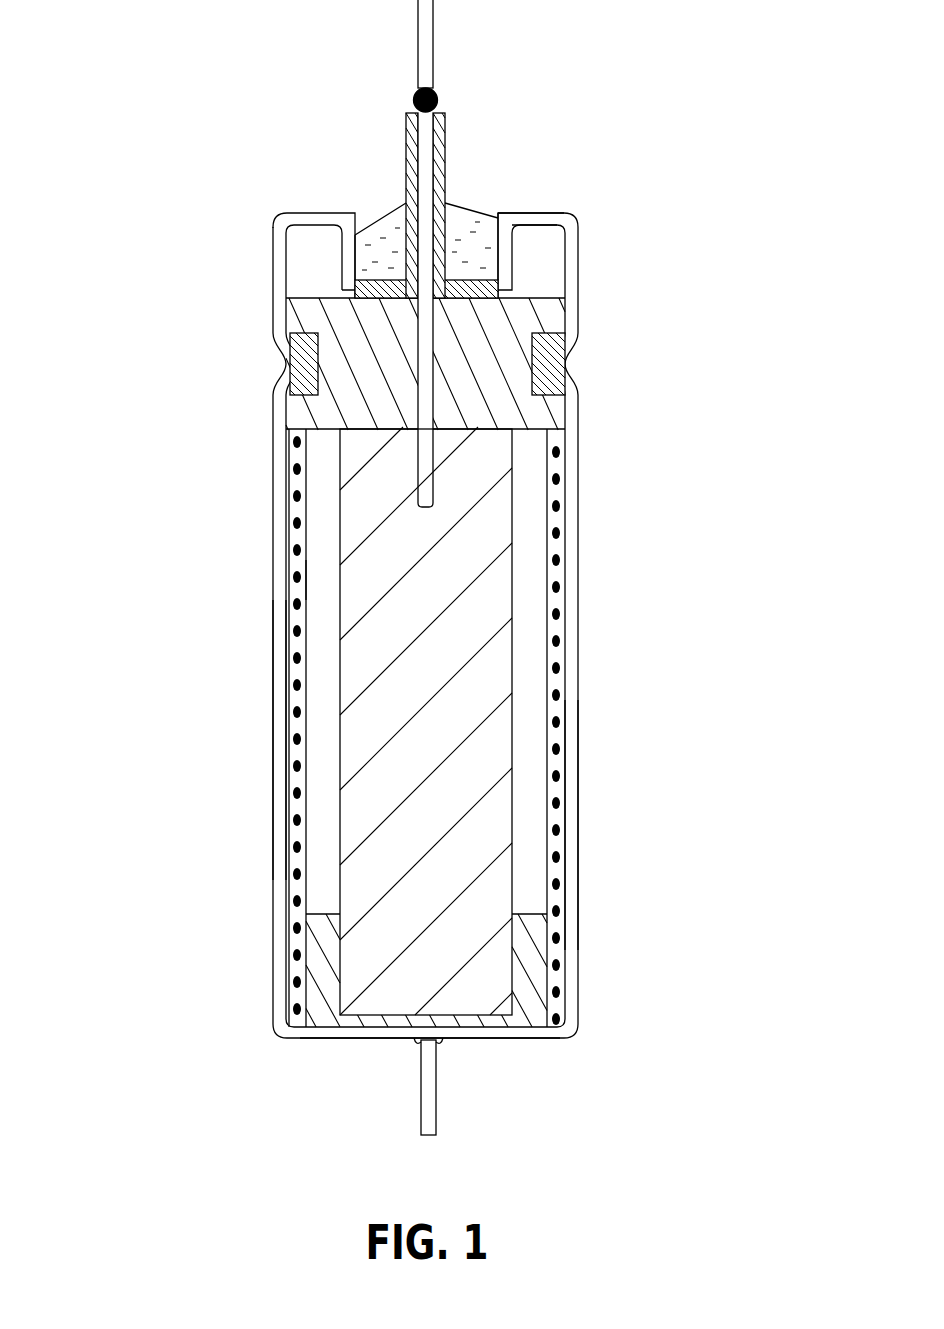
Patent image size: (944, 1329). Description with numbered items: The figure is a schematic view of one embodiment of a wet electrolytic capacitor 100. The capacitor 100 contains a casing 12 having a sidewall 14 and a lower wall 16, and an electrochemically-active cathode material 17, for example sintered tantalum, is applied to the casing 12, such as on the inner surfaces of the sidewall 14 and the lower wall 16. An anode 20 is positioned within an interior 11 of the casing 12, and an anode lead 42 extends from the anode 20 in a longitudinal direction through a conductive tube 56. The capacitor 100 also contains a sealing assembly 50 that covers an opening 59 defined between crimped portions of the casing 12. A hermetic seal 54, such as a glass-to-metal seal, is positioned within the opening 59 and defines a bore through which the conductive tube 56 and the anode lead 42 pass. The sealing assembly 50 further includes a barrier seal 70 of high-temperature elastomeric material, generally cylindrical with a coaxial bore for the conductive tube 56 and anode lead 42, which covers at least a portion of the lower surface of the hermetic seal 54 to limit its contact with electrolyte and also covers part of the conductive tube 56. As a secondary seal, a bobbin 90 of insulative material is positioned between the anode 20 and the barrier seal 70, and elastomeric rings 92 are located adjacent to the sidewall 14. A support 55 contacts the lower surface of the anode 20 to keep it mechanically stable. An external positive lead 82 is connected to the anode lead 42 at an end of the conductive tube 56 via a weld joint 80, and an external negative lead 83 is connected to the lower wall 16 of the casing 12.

The capacitor 100 is at (125, 193).
The casing 12 is at (612, 700).
The sidewall 14 is at (285, 731).
The lower wall 16 is at (338, 1040).
The electrochemically-active cathode material 17 is at (295, 473).
The interior 11 is at (318, 573).
The anode 20 is at (365, 800).
The anode lead 42 is at (428, 487).
The sealing assembly 50 is at (530, 262).
The hermetic seal 54 is at (478, 200).
The conductive tube 56 is at (406, 157).
The opening 59 is at (357, 235).
The barrier seal 70 is at (350, 294).
The weld joint 80 is at (438, 101).
The external positive lead 82 is at (434, 36).
The external negative lead 83 is at (432, 1110).
The bobbin 90 is at (520, 412).
The elastomeric rings 92 is at (300, 365).
The support 55 is at (528, 1010).